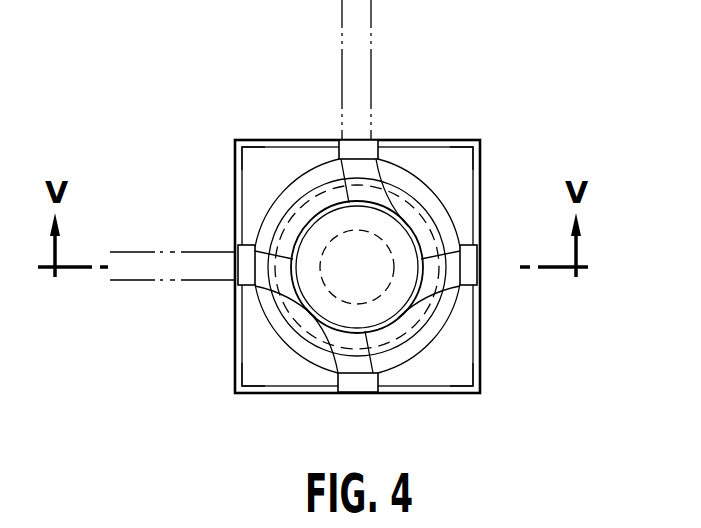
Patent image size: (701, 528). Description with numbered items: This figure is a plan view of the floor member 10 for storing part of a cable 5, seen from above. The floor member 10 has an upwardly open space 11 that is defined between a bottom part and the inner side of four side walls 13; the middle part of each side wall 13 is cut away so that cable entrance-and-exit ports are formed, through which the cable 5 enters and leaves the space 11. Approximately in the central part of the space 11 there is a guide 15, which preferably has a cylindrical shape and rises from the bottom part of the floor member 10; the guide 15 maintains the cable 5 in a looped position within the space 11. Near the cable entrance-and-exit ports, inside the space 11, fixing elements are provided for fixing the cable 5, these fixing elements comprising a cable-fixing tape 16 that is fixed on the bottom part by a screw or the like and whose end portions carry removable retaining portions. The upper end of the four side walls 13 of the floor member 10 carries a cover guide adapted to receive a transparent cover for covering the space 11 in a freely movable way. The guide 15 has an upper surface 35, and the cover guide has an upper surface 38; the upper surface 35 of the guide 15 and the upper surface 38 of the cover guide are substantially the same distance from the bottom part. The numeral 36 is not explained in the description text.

The cable 5 is at (373, 75).
The floor member 10 is at (225, 139).
The upwardly open space 11 is at (433, 347).
The side wall 13 is at (447, 141).
The guide 15 is at (405, 247).
The cable-fixing tape 16 is at (353, 143).
The upper surface of guide 35 is at (372, 283).
The spring arm 36 is at (397, 195).
The upper surface of cover guide 38 is at (262, 160).